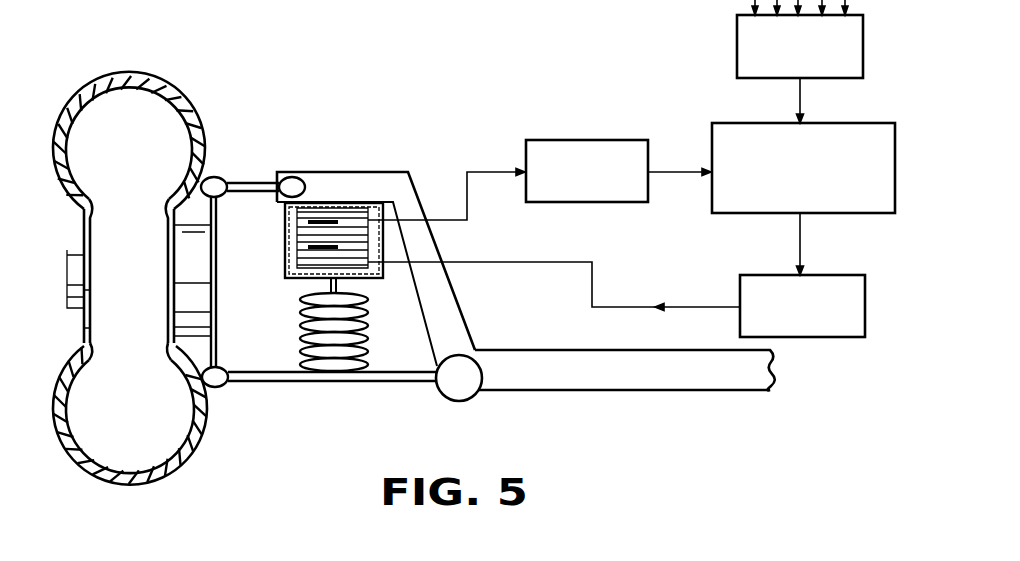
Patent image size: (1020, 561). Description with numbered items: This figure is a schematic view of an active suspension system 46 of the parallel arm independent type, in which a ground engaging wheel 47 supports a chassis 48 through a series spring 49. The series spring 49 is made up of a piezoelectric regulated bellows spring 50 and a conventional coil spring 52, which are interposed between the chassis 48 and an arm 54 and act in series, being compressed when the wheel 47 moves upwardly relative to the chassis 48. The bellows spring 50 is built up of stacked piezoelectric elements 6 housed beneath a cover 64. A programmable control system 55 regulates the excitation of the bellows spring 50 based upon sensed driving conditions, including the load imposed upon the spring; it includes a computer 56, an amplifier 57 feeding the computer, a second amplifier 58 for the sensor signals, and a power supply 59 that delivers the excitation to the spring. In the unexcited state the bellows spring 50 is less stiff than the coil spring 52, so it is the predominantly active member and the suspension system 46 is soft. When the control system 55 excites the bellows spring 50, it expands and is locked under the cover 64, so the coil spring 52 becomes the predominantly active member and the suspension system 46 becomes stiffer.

The piezoelectric elements 6 is at (332, 238).
The active suspension system 46 is at (395, 128).
The ground engaging wheel 47 is at (152, 84).
The chassis 48 is at (547, 384).
The series spring 49 is at (318, 315).
The piezoelectric regulated bellows spring 50 is at (304, 240).
The conventional coil spring 52 is at (350, 362).
The arm 54 is at (282, 383).
The programmable control system 55 is at (631, 202).
The computer 56 is at (720, 200).
The amplifier 57 is at (548, 147).
The second amplifier 58 is at (743, 42).
The power supply 59 is at (848, 330).
The cover 64 is at (383, 277).